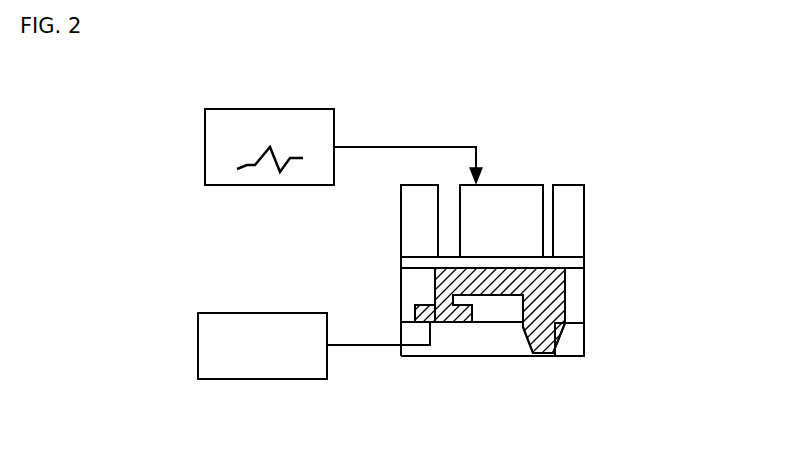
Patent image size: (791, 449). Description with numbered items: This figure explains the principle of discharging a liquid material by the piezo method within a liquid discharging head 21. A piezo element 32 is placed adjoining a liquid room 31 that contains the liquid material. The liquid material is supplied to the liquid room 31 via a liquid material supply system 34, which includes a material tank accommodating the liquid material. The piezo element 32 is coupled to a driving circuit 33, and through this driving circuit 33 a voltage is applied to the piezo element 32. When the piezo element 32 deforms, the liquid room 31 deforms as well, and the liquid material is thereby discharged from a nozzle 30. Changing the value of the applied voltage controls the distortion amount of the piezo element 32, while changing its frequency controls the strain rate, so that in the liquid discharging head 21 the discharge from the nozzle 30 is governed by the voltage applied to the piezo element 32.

The liquid discharging head 21 is at (642, 248).
The nozzle 30 is at (543, 356).
The liquid room 31 is at (435, 287).
The piezo element 32 is at (510, 184).
The driving circuit 33 is at (272, 109).
The liquid material supply system 34 is at (265, 313).